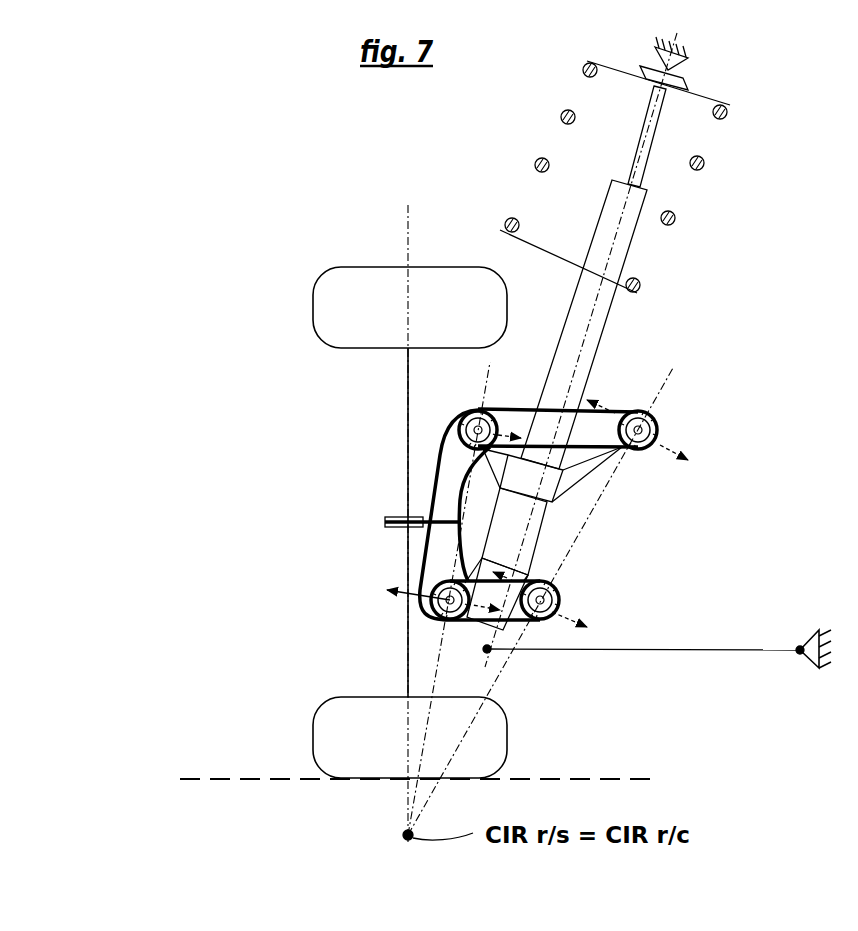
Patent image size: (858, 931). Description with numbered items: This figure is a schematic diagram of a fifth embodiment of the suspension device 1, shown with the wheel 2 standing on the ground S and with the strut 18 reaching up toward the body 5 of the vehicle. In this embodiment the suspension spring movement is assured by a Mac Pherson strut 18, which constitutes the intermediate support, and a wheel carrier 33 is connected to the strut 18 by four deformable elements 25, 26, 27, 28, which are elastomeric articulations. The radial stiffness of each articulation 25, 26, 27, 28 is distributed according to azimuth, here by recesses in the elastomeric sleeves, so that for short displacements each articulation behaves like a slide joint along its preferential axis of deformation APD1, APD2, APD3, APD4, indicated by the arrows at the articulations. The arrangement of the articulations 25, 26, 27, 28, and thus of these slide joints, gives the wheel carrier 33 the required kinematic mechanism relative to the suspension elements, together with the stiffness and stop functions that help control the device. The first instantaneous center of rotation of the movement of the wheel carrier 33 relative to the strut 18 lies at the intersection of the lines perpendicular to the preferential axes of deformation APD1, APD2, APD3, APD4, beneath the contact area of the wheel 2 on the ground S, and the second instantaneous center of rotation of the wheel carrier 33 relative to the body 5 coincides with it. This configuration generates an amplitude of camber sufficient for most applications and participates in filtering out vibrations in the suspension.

The suspension device 1 is at (672, 338).
The wheel 2 is at (408, 645).
The body 5 is at (813, 630).
The strut 18 is at (590, 346).
The deformable element 25 is at (472, 408).
The deformable element 26 is at (638, 410).
The deformable element 27 is at (560, 590).
The deformable element 28 is at (452, 628).
The wheel carrier 33 is at (592, 428).
The preferential axis of deformation APD1 is at (431, 421).
The preferential axis of deformation APD2 is at (660, 445).
The preferential axis of deformation APD3 is at (565, 617).
The preferential axis of deformation APD4 is at (388, 587).
The ground S is at (580, 780).